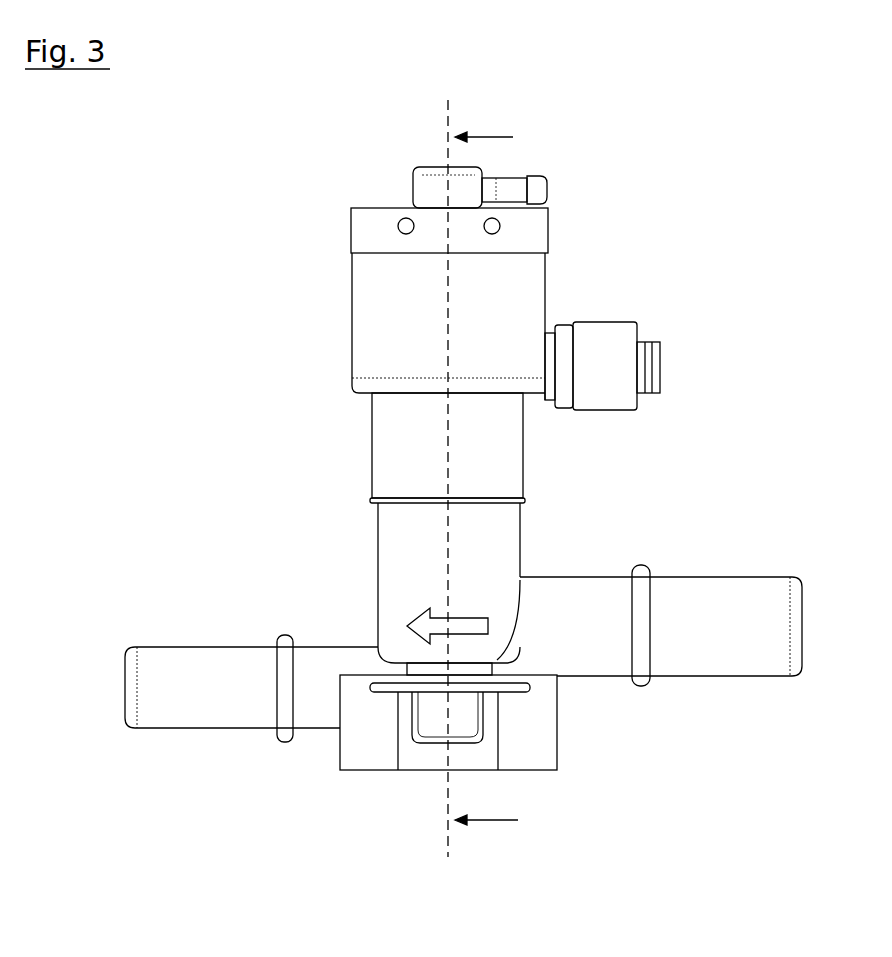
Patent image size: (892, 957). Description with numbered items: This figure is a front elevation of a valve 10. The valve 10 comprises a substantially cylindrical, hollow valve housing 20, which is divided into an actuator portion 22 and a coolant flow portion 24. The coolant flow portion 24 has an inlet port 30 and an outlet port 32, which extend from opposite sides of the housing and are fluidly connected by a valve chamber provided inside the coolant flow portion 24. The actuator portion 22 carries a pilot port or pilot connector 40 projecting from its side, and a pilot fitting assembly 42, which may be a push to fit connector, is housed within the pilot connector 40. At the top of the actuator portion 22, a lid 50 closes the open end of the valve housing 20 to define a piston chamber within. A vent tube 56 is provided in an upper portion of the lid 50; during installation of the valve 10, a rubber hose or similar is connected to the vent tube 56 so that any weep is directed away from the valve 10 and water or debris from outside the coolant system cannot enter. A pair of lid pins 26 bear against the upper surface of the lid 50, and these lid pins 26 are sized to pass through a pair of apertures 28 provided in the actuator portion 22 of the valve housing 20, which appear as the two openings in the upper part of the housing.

The valve 10 is at (718, 172).
The valve housing 20 is at (497, 460).
The actuator portion 22 is at (518, 300).
The coolant flow portion 24 is at (493, 565).
The lid pins 26 is at (398, 226).
The apertures 28 is at (500, 228).
The inlet port 30 is at (735, 618).
The outlet port 32 is at (200, 682).
The pilot connector 40 is at (635, 322).
The pilot fitting assembly 42 is at (664, 372).
The lid 50 is at (413, 185).
The vent tube 56 is at (510, 190).